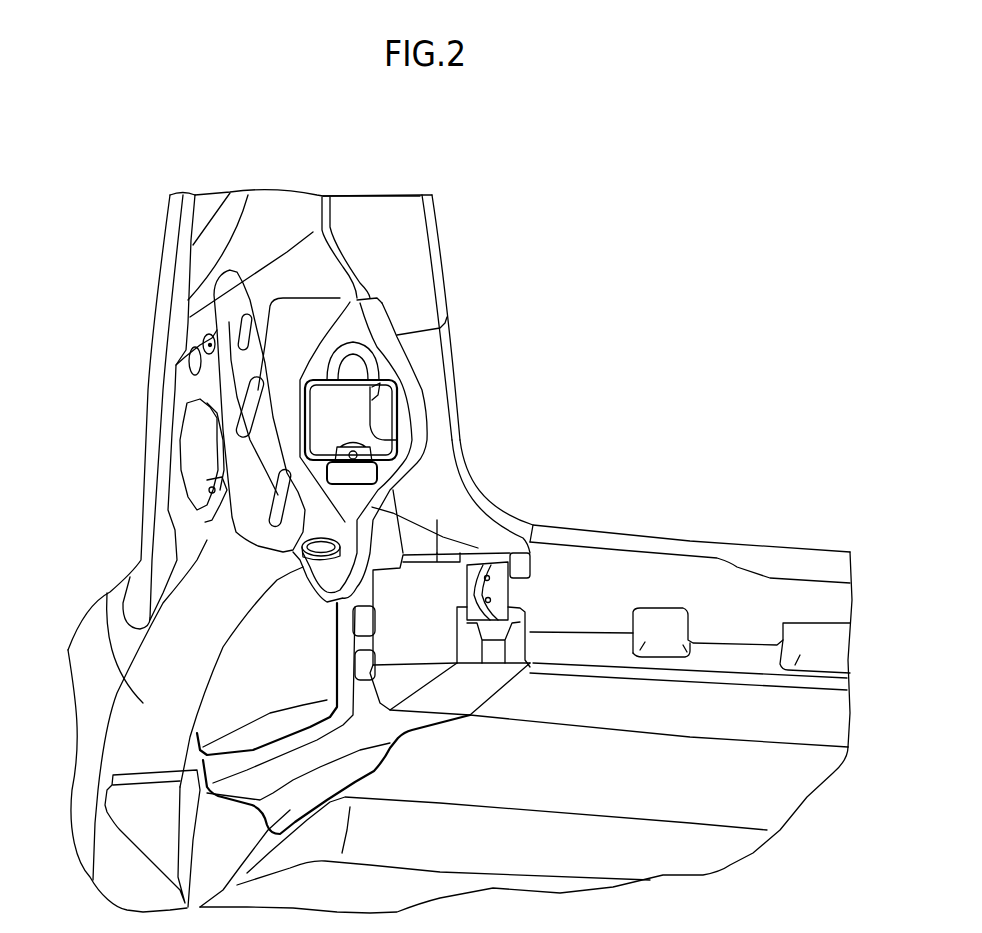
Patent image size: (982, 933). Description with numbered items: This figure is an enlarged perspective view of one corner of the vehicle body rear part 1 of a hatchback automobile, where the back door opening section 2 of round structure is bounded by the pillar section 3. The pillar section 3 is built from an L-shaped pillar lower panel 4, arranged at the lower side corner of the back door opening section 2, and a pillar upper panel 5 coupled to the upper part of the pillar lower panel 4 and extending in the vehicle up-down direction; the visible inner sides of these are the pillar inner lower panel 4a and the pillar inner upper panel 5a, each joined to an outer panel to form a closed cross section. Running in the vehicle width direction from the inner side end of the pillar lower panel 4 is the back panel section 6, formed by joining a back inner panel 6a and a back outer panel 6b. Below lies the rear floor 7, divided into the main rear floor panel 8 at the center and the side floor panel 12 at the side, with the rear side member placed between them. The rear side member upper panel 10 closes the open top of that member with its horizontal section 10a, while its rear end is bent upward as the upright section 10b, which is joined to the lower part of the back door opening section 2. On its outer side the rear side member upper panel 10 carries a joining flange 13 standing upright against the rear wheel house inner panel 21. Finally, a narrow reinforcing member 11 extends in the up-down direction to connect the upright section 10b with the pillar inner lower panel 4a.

The vehicle body rear part 1 is at (277, 167).
The back door opening section 2 is at (586, 413).
The pillar section 3 is at (423, 193).
The pillar lower panel 4 is at (432, 402).
The pillar inner lower panel 4a is at (443, 477).
The pillar upper panel 5 is at (422, 242).
The pillar inner upper panel 5a is at (425, 296).
The back panel section 6 is at (745, 537).
The back inner panel 6a is at (620, 560).
The back outer panel 6b is at (797, 544).
The rear floor 7 is at (733, 866).
The main rear floor panel 8 is at (786, 780).
The rear side member upper panel 10 is at (408, 735).
The horizontal section 10a is at (480, 686).
The upright section 10b is at (530, 653).
The reinforcing member 11 is at (507, 599).
The side floor panel 12 is at (398, 667).
The joining flange 13 is at (253, 752).
The rear wheel house inner panel 21 is at (108, 592).